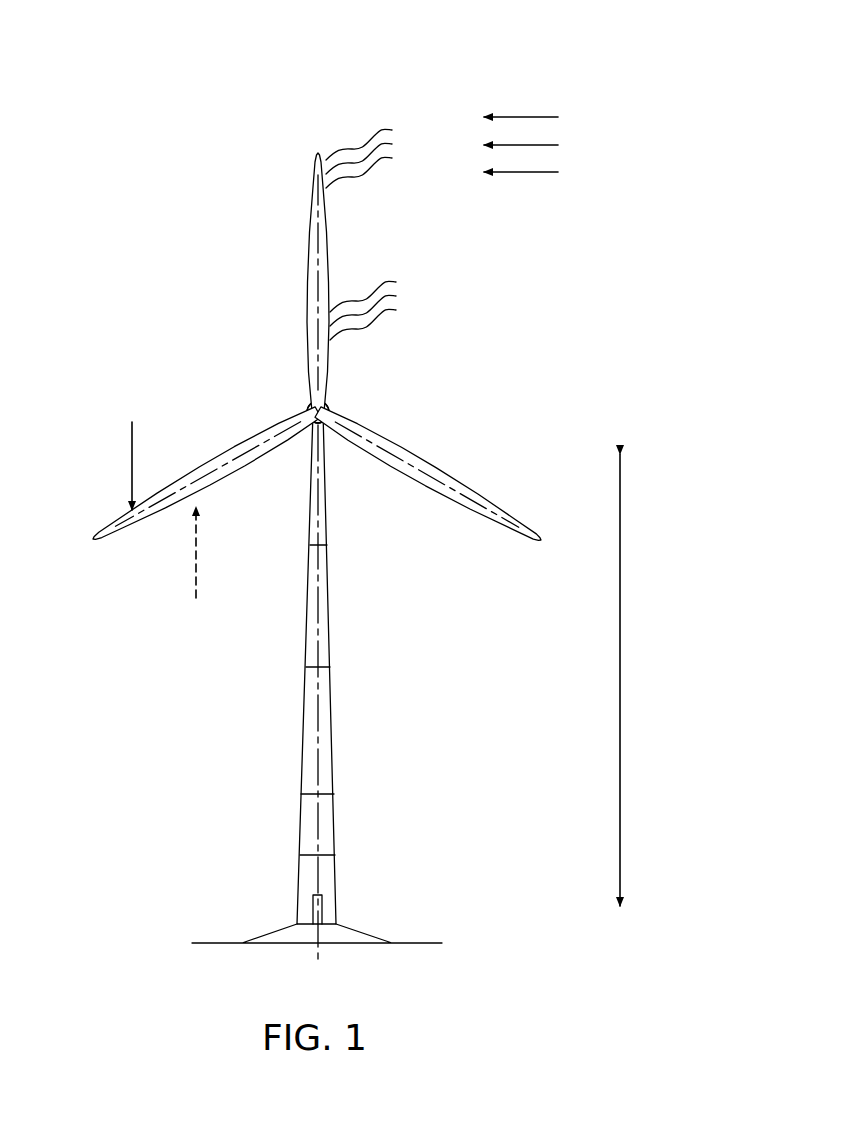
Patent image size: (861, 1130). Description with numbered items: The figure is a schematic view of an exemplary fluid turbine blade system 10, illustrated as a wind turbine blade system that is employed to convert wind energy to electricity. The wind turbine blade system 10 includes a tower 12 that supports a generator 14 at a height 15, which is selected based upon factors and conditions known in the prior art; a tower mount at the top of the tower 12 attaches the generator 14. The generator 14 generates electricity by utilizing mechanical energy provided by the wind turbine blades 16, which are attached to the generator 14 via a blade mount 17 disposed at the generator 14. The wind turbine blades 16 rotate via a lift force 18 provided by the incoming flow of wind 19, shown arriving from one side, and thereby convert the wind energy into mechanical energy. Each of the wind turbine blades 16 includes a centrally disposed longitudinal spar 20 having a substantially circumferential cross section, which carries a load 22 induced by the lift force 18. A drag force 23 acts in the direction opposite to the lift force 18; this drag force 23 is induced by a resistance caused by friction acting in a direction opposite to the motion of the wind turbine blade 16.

The wind turbine blade system 10 is at (126, 55).
The tower 12 is at (334, 708).
The generator 14 is at (330, 410).
The height 15 is at (620, 736).
The wind turbine blades 16 is at (490, 500).
The blade mount 17 is at (306, 410).
The lift force 18 is at (346, 147).
The wind 19 is at (521, 116).
The longitudinal spar 20 is at (215, 470).
The load 22 is at (131, 468).
The drag force 23 is at (196, 572).